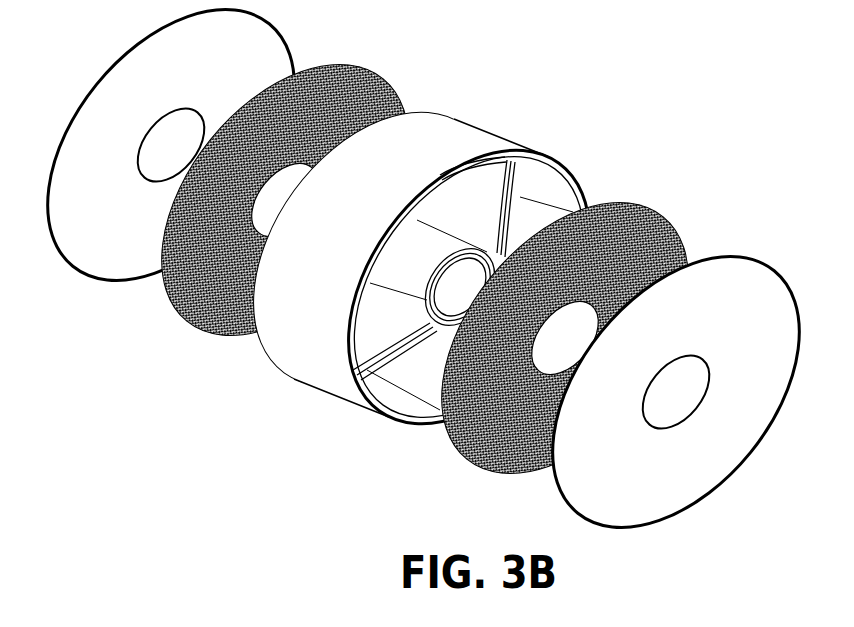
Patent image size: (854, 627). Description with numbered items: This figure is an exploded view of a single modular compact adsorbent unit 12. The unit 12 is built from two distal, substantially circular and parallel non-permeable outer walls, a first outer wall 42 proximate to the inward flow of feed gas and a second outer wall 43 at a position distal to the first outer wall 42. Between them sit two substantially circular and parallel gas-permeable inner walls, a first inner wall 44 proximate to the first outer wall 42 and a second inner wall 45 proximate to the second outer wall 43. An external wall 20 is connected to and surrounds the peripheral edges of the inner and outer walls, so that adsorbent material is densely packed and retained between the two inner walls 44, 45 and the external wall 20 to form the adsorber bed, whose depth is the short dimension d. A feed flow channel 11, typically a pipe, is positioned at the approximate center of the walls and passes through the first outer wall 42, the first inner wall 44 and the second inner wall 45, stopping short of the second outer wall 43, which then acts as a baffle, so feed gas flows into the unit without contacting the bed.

The modular compact adsorbent unit 12 is at (424, 287).
The feed flow channel 11 is at (433, 247).
The external wall 20 is at (450, 281).
The first outer wall 42 is at (723, 487).
The second outer wall 43 is at (77, 278).
The first inner wall 44 is at (527, 472).
The second inner wall 45 is at (202, 333).